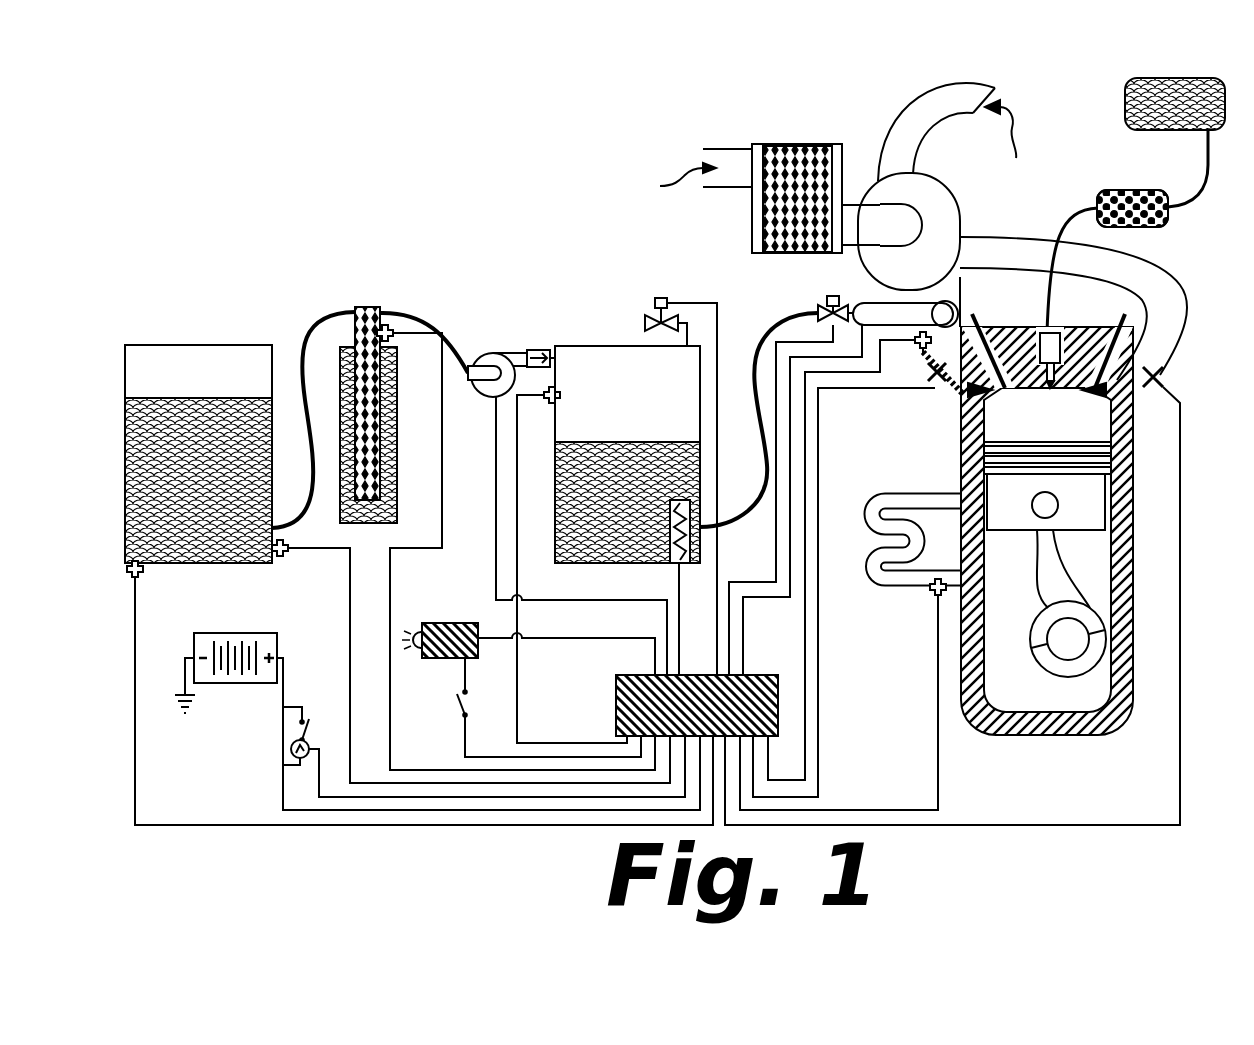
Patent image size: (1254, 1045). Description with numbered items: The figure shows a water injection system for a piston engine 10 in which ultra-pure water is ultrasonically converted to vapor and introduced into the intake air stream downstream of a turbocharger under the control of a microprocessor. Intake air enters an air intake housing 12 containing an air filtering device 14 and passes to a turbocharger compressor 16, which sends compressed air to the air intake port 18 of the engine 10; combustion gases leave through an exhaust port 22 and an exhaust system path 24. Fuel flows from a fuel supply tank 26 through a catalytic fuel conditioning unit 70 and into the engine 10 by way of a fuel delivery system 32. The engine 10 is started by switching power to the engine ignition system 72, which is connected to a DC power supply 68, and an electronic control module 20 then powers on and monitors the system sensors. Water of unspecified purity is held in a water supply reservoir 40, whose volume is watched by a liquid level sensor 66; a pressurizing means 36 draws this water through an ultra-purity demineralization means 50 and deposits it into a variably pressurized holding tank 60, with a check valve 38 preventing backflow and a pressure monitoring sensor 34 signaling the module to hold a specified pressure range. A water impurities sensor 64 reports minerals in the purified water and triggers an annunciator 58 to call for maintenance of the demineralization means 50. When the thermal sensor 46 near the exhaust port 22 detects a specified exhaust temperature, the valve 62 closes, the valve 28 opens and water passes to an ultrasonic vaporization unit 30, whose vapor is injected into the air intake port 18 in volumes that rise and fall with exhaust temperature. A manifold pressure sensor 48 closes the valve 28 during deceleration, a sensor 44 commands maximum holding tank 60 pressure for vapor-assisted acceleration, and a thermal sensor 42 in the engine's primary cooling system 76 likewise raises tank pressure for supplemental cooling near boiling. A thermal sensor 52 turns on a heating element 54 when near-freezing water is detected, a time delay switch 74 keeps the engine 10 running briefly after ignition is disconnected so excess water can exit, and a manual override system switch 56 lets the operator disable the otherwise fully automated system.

The piston engine 10 is at (1124, 727).
The air intake housing 12 is at (671, 180).
The air filtering device 14 is at (802, 143).
The turbocharger compressor 16 is at (963, 207).
The air intake port 18 is at (956, 401).
The electronic control module 20 is at (612, 710).
The exhaust port 22 is at (1140, 398).
The exhaust system path 24 is at (1017, 230).
The fuel supply tank 26 is at (1174, 132).
The valve 28 is at (820, 302).
The ultrasonic vaporization unit 30 is at (902, 303).
The fuel delivery system 32 is at (1036, 341).
The pressure monitoring sensor 34 is at (547, 403).
The pressurizing means 36 is at (491, 352).
The check valve 38 is at (539, 349).
The water supply reservoir 40 is at (199, 344).
The thermal sensor 42 is at (931, 594).
The sensor 44 is at (925, 387).
The thermal sensor 46 is at (1167, 378).
The pressure sensor 48 is at (921, 346).
The ultra-purity demineralization means 50 is at (352, 372).
The thermal sensor 52 is at (145, 576).
The heating element 54 is at (671, 566).
The manual override system switch 56 is at (459, 714).
The annunciator 58 is at (422, 621).
The holding tank 60 is at (597, 345).
The valve 62 is at (660, 300).
The water impurities sensor 64 is at (395, 340).
The liquid level sensor 66 is at (284, 560).
The DC power supply 68 is at (193, 652).
The catalytic fuel conditioning unit 70 is at (1106, 190).
The engine ignition system 72 is at (290, 748).
The time delay switch 74 is at (308, 727).
The primary cooling system 76 is at (889, 492).